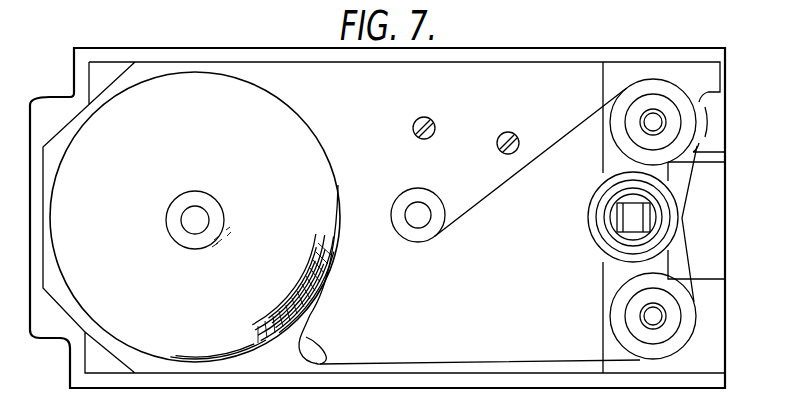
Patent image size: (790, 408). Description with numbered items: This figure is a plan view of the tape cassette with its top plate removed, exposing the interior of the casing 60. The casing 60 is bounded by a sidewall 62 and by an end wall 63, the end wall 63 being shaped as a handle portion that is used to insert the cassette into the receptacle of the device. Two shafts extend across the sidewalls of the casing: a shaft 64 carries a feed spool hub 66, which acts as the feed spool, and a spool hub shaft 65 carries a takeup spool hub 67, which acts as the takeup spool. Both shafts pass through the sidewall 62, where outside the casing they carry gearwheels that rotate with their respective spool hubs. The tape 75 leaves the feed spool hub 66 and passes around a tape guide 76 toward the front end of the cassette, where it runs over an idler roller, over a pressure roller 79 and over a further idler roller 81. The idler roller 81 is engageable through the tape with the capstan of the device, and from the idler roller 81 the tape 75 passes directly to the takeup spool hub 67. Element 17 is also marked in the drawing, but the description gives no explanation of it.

The casing 60 is at (358, 62).
The end wall 63 is at (40, 107).
The sidewall 62 is at (437, 111).
The shaft 64 is at (194, 208).
The feed spool hub 66 is at (168, 227).
The takeup spool hub 67 is at (405, 196).
The spool hub shaft 65 is at (405, 214).
The tape 75 is at (312, 318).
The tape guide 76 is at (328, 352).
The idler roller 81 is at (612, 111).
The pressure roller 79 is at (590, 213).
The lower pulley 17 is at (614, 320).